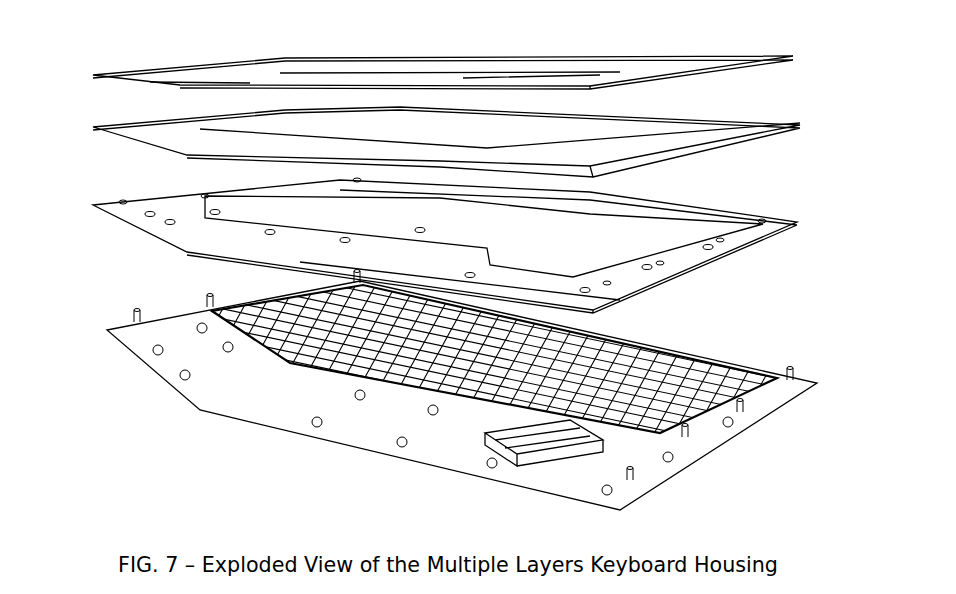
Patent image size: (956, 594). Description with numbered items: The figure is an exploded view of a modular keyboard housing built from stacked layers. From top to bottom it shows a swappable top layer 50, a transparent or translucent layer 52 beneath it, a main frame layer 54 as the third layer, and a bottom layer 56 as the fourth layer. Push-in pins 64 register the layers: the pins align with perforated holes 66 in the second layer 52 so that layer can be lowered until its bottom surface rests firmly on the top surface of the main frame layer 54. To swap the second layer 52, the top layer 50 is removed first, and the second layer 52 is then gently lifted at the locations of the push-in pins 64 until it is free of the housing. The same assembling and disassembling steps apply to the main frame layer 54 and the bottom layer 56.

The swappable top layer 50 is at (750, 57).
The transparent or translucent layer 52 is at (763, 127).
The main frame layer 54 is at (762, 220).
The bottom layer 56 is at (777, 380).
The push-in pins 64 is at (357, 283).
The perforated holes 66 is at (357, 179).